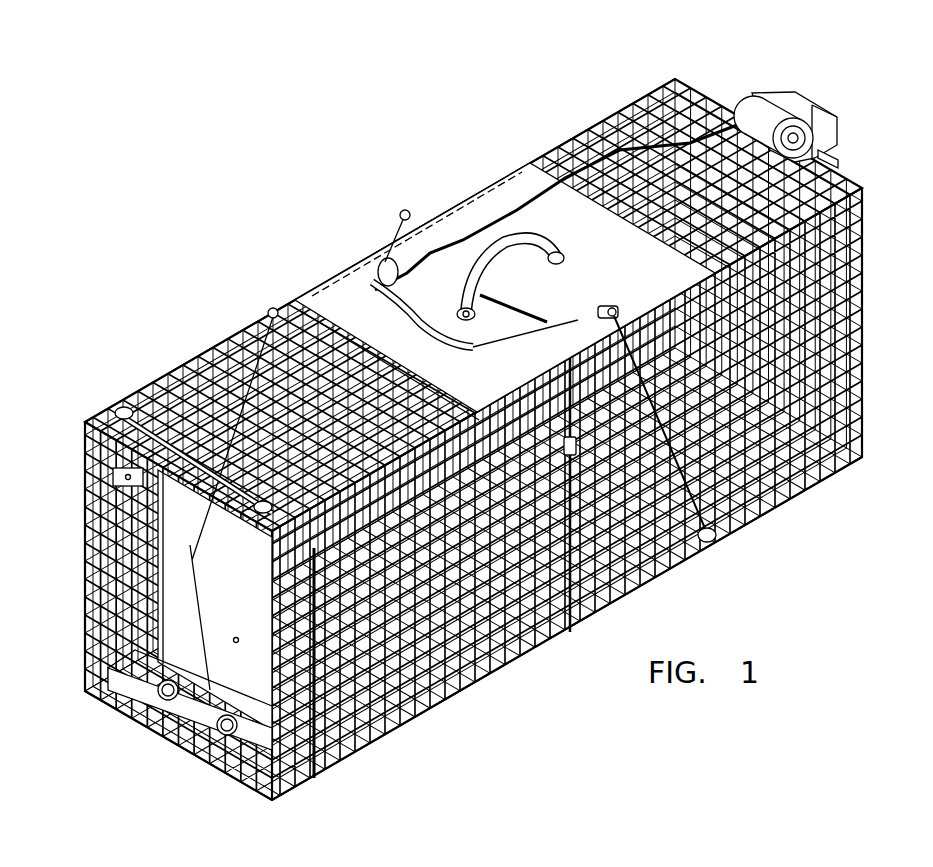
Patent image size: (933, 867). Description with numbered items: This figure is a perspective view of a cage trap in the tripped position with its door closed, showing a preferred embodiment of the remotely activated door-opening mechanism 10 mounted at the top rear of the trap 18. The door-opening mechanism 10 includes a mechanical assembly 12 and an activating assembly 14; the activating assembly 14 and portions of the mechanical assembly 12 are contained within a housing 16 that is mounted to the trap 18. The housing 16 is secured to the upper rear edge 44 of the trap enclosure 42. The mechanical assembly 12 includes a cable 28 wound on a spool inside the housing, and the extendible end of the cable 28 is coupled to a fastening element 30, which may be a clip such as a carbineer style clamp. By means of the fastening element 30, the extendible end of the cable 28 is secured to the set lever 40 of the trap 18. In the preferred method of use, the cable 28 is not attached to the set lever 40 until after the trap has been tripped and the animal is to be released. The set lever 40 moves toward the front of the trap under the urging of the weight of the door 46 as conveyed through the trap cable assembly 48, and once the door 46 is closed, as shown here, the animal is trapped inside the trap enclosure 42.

The door-opening mechanism 10 is at (759, 78).
The mechanical assembly 12 is at (619, 147).
The activating assembly 14 is at (812, 95).
The housing 16 is at (836, 160).
The trap 18 is at (473, 419).
The cable 28 is at (502, 222).
The fastening element 30 is at (378, 256).
The set lever 40 is at (465, 345).
The trap enclosure 42 is at (728, 452).
The upper rear edge 44 is at (716, 98).
The door 46 is at (244, 560).
The trap cable assembly 48 is at (204, 588).